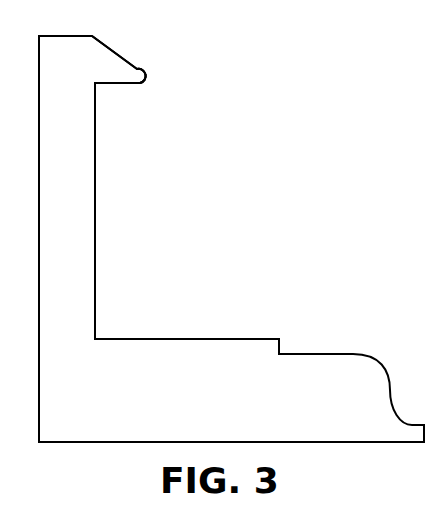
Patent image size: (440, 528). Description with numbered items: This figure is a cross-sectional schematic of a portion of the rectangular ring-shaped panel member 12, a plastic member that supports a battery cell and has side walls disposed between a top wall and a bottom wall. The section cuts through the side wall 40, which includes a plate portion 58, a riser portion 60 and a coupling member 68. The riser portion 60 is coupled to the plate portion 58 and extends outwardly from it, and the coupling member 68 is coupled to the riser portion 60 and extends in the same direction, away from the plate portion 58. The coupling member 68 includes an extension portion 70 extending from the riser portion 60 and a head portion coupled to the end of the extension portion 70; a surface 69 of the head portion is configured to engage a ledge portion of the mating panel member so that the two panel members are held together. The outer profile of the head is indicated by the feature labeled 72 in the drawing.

The rectangular ring-shaped panel member 12 is at (300, 166).
The side wall 40 is at (166, 257).
The plate portion 58 is at (255, 352).
The riser portion 60 is at (94, 303).
The coupling member 68 is at (116, 93).
The surface 69 is at (133, 85).
The extension portion 70 is at (94, 188).
The inclined lip / flange 72 is at (111, 57).